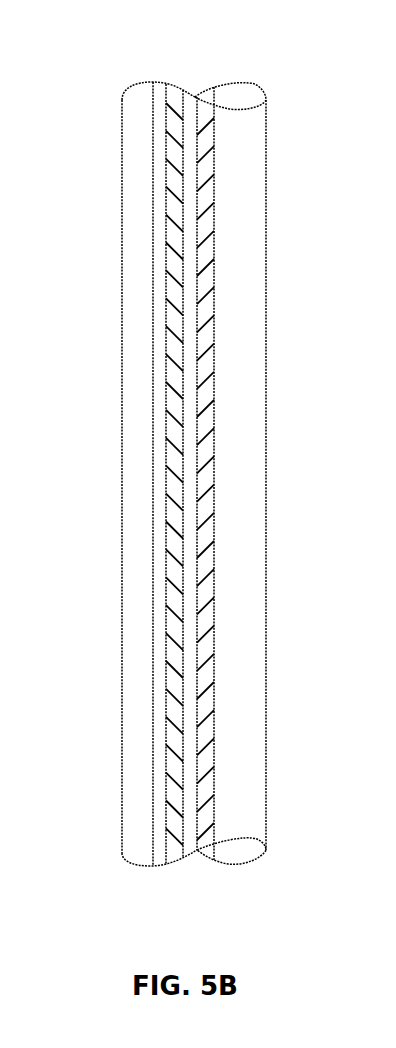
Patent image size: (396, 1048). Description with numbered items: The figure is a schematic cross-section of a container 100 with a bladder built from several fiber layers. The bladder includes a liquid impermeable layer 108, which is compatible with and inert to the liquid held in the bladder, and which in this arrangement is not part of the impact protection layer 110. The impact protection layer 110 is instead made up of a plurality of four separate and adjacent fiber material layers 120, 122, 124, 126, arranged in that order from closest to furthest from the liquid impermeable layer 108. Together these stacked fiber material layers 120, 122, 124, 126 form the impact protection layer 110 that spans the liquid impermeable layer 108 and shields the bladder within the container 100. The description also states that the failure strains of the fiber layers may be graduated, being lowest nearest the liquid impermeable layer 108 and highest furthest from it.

The container 100 is at (136, 188).
The liquid impermeable layer 108 is at (240, 238).
The impact protection layer 110 is at (215, 876).
The fiber material layer 120 is at (203, 188).
The fiber material layer 122 is at (193, 106).
The fiber material layer 124 is at (176, 99).
The fiber material layer 126 is at (153, 358).